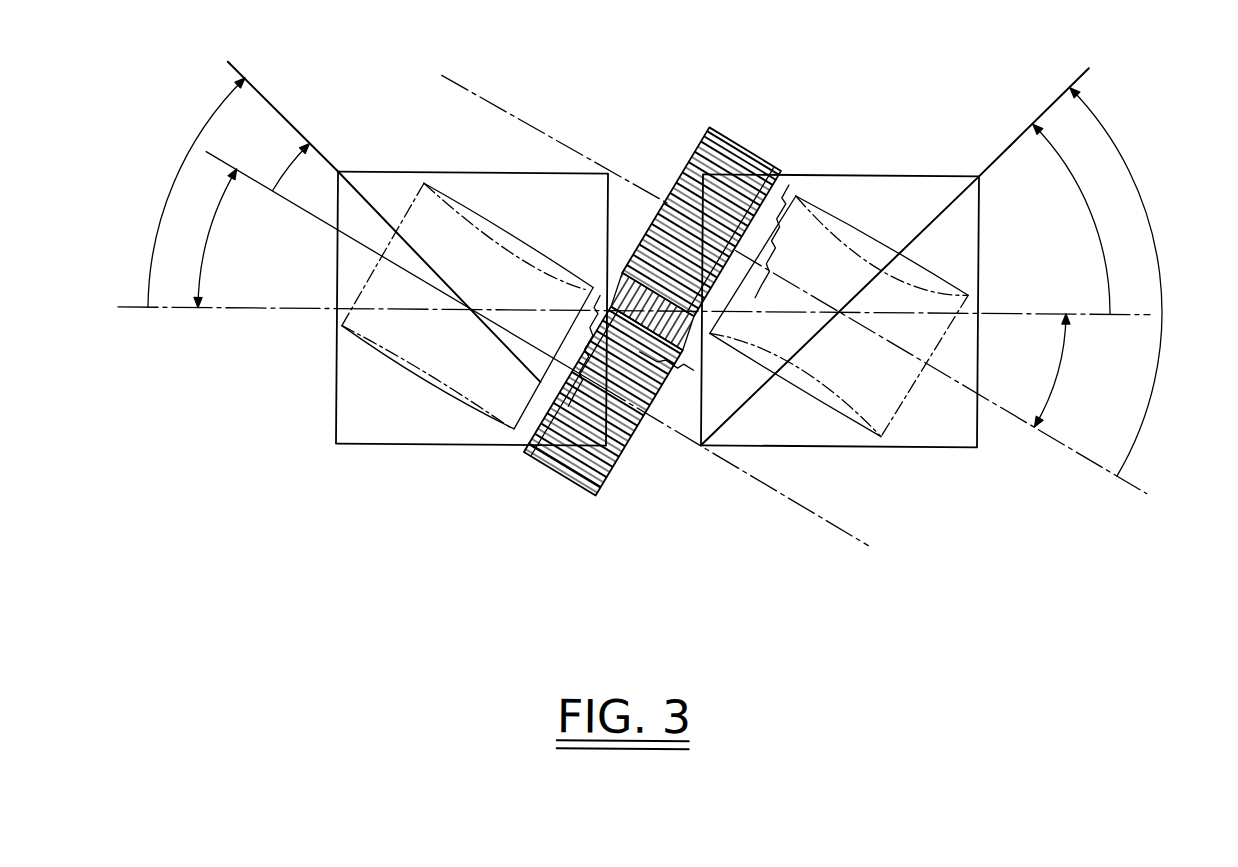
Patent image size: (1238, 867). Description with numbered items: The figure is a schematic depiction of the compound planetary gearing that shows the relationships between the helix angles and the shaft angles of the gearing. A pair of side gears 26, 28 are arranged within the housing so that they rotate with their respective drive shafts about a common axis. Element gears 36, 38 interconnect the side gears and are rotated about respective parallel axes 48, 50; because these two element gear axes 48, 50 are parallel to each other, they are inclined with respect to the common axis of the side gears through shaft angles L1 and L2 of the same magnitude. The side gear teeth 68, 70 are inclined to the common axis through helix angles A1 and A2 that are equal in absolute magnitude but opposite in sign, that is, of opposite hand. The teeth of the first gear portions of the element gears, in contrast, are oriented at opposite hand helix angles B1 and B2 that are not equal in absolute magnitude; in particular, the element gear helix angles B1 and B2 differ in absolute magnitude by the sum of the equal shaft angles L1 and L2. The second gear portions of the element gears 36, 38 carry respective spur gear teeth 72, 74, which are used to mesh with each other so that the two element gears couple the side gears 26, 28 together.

The side gear 26 is at (383, 447).
The side gear 28 is at (936, 447).
The element gear 36 is at (520, 242).
The element gear 38 is at (783, 380).
The element gear axis 48 is at (297, 212).
The element gear axis 50 is at (508, 117).
The side gear teeth 68 is at (354, 190).
The side gear teeth 70 is at (951, 200).
The spur gear teeth 72 is at (700, 343).
The spur gear teeth 74 is at (605, 292).
The helix angle A1 is at (199, 140).
The helix angle B1 is at (282, 177).
The shaft angle L1 is at (209, 242).
The helix angle A2 is at (1102, 246).
The helix angle B2 is at (1149, 217).
The shaft angle L2 is at (1064, 362).